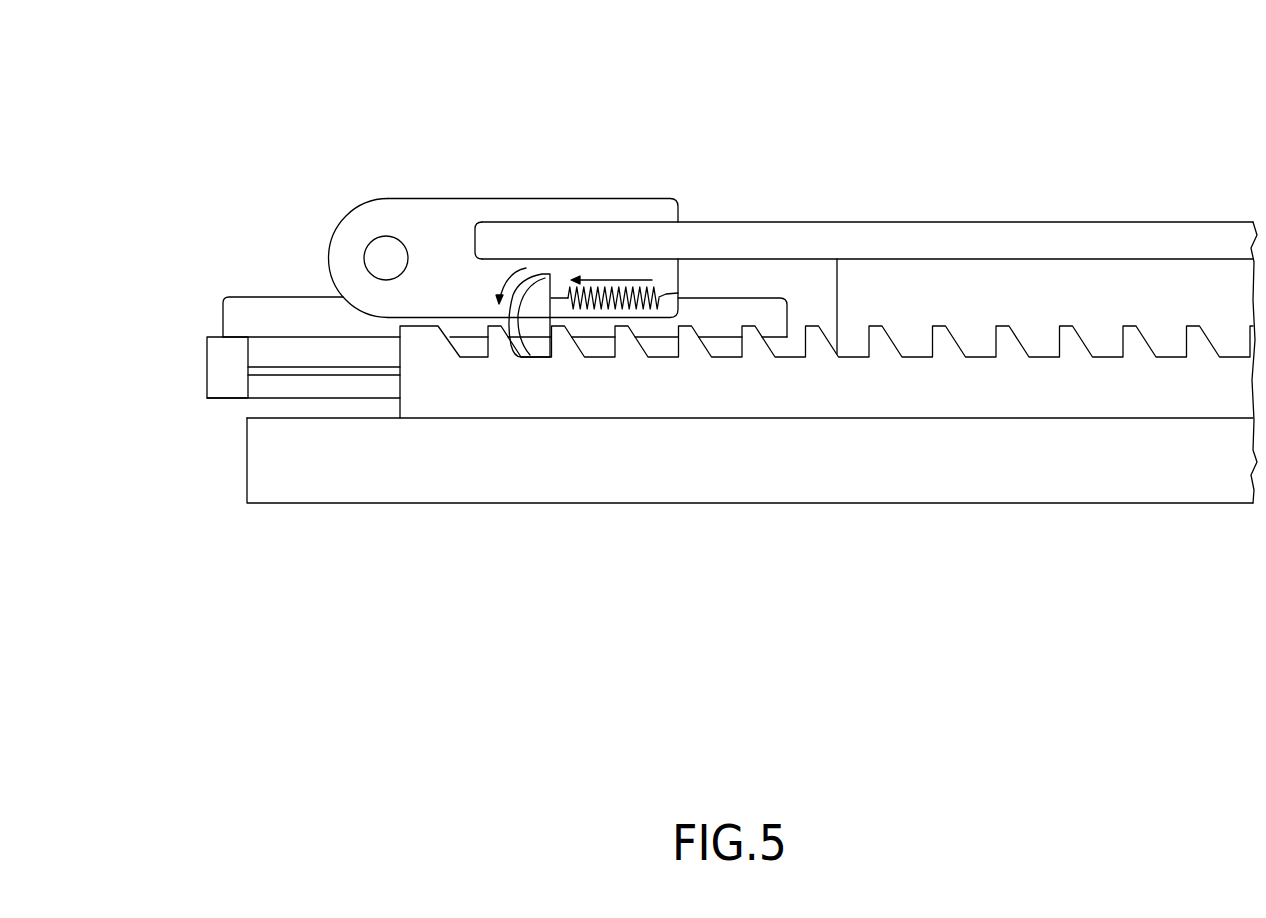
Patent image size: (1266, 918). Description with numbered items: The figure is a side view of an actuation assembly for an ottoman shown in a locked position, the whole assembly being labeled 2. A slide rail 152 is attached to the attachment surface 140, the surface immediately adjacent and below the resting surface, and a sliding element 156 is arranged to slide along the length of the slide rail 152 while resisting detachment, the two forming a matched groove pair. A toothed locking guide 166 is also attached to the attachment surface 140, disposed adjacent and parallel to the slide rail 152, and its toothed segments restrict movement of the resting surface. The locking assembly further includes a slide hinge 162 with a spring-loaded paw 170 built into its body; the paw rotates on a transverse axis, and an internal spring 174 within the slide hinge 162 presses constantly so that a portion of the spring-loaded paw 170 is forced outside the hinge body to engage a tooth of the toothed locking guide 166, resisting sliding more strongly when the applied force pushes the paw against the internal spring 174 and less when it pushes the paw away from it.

The apparatus 2 is at (160, 68).
The attachment surface 140 is at (661, 495).
The slide rail 152 is at (262, 407).
The sliding element 156 is at (178, 318).
The slide hinge 162 is at (455, 199).
The toothed locking guide 166 is at (453, 402).
The spring-loaded paw 170 is at (534, 330).
The internal spring 174 is at (617, 280).